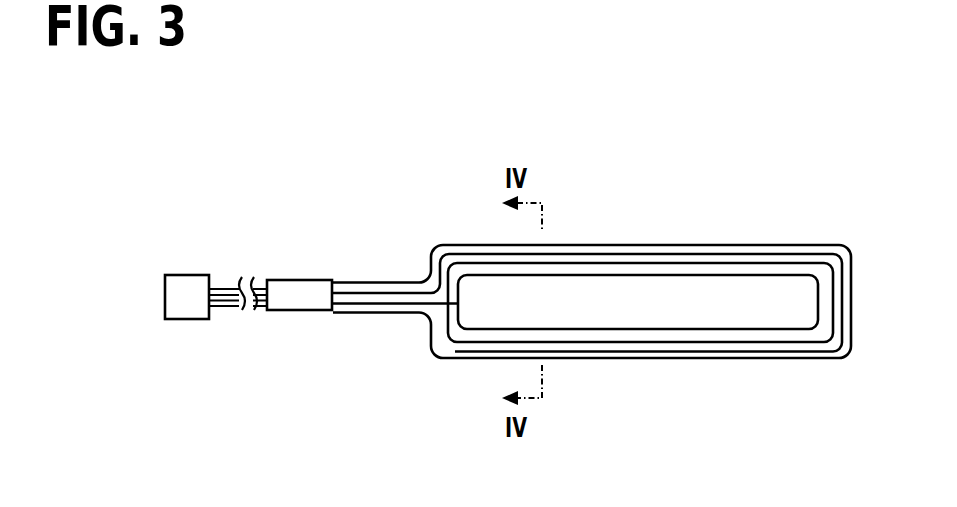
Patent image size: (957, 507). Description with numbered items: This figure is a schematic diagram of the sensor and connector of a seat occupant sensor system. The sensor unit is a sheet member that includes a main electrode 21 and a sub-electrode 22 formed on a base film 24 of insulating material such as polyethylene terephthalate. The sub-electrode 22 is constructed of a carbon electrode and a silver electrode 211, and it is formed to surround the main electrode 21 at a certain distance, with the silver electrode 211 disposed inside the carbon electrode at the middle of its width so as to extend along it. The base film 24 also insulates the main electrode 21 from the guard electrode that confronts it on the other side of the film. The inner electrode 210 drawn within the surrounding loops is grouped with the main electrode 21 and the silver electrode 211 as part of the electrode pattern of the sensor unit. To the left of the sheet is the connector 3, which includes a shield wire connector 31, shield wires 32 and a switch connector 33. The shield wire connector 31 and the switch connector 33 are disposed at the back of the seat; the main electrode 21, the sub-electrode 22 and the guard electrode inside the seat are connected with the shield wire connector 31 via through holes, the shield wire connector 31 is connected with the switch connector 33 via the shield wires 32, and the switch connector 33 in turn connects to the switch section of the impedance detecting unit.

The connector 3 is at (251, 369).
The main electrode 21 is at (587, 235).
The sub-electrode 22 is at (653, 352).
The base film 24 is at (645, 245).
The shield wire connector 31 is at (299, 339).
The shield wires 32 is at (232, 306).
The switch connector 33 is at (188, 304).
The inner coil conductor 210 is at (723, 182).
The silver electrode 211 is at (736, 254).